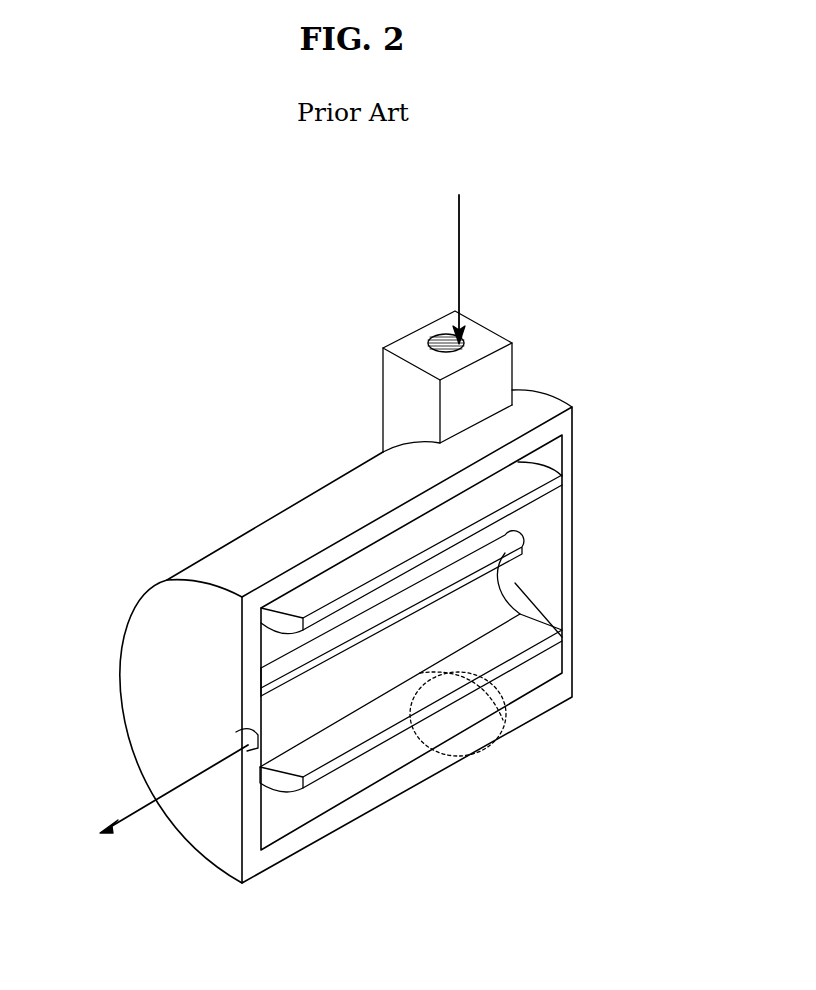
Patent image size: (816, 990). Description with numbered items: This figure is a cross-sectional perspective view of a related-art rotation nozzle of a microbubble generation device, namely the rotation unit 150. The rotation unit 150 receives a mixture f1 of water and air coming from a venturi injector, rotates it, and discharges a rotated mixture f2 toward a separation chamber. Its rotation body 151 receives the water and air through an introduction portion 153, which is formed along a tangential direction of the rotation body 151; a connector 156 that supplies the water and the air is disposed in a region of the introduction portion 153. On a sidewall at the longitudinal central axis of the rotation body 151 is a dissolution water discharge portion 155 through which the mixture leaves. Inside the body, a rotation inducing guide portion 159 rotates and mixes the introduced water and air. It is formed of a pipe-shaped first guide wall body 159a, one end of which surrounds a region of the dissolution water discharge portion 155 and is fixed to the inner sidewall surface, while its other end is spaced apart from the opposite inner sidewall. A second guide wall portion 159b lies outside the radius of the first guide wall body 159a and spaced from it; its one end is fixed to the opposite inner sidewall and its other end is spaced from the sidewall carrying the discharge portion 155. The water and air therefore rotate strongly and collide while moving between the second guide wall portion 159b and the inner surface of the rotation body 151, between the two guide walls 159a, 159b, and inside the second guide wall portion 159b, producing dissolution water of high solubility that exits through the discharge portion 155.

The rotation unit 150 is at (540, 360).
The rotation body 151 is at (210, 556).
The introduction portion 153 is at (444, 333).
The dissolution water discharge portion 155 is at (247, 745).
The connector 156 is at (403, 398).
The rotation inducing guide portion 159 is at (608, 759).
The first guide wall body 159a is at (498, 700).
The second guide wall portion 159b is at (420, 748).
The mixture of the water and the air f1 is at (457, 258).
The rotated mixture f2 is at (154, 801).